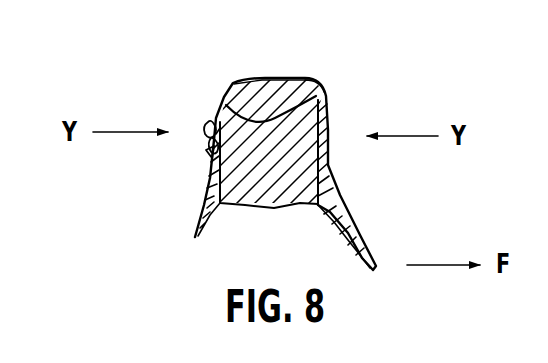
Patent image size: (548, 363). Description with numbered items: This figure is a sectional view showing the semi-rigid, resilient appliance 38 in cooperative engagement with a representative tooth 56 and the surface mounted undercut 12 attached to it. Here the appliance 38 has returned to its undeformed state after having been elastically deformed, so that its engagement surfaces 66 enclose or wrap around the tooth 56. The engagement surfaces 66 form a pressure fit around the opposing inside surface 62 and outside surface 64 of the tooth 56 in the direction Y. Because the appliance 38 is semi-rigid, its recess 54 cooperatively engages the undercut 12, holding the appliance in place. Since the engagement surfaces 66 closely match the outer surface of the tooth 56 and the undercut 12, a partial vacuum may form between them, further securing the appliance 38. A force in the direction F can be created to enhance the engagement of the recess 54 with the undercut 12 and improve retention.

The surface mounted undercut 12 is at (211, 122).
The resilient appliance 38 is at (364, 89).
The recess 54 is at (208, 150).
The tooth 56 is at (272, 210).
The inside surface 62 is at (300, 100).
The outside surface 64 is at (248, 84).
The engagement surfaces 66 is at (313, 82).